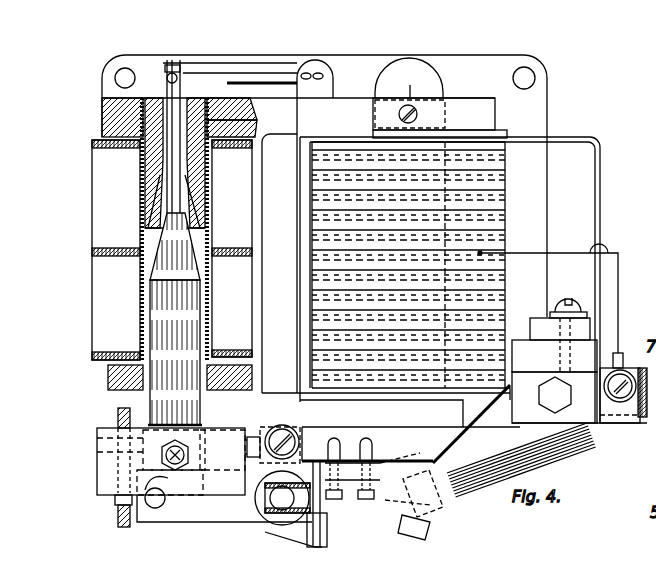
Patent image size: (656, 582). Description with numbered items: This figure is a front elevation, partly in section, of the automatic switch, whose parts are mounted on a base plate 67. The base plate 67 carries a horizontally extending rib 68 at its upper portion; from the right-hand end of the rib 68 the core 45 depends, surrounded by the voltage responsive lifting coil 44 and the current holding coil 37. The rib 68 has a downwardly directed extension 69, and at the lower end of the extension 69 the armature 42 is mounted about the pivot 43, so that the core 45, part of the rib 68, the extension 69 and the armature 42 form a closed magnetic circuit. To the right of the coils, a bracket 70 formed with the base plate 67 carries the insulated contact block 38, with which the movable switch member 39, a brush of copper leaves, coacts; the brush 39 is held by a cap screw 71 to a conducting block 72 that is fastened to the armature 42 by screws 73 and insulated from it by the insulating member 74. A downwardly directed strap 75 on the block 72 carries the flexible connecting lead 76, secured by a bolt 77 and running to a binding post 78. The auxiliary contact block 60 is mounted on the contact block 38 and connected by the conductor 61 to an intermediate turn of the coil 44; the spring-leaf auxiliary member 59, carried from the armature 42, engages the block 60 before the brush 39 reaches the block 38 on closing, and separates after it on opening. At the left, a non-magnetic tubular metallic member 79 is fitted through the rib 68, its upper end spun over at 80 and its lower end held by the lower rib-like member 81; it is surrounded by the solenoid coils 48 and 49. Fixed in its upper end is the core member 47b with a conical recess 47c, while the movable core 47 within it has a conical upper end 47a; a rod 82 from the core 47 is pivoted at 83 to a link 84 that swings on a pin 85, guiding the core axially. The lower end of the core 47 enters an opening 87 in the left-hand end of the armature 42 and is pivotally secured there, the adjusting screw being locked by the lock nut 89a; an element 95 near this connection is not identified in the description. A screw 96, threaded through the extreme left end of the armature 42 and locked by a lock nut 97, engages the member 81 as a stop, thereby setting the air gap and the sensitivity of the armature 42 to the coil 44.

The current holding coil 37 is at (486, 178).
The contact block 38 is at (625, 412).
The movable switch member 39 is at (503, 442).
The armature 42 is at (411, 444).
The pivot 43 is at (285, 421).
The voltage responsive lifting coil 44 is at (476, 246).
The core 45 is at (448, 213).
The core 47 is at (193, 404).
The conical upper end 47a is at (175, 250).
The fixed core member 47b is at (205, 97).
The conical recess 47c is at (162, 205).
The coil 48 is at (229, 229).
The coil 49 is at (232, 302).
The auxiliary contact member 59 is at (587, 412).
The auxiliary contact block 60 is at (633, 417).
The conductor 61 is at (620, 288).
The base plate 67 is at (412, 60).
The rib 68 is at (458, 107).
The downward extension 69 is at (286, 245).
The bracket 70 is at (490, 392).
The cap screw 71 is at (430, 528).
The conducting block 72 is at (446, 505).
The screws 73 is at (368, 510).
The insulating member 74 is at (500, 455).
The strap 75 is at (322, 537).
The flexible connecting lead 76 is at (307, 487).
The bolt 77 is at (336, 510).
The binding post 78 is at (270, 507).
The tubular metallic member 79 is at (255, 130).
The spun-over upper end 80 is at (140, 97).
The lower rib-like member 81 is at (116, 384).
The rod 82 is at (255, 110).
The pivotal connection 83 is at (177, 68).
The link 84 is at (258, 74).
The pin 85 is at (318, 70).
The opening 87 is at (162, 505).
The lock nut 89a is at (180, 467).
The bracket 95 is at (248, 443).
The screw 96 is at (120, 420).
The lock nut 97 is at (116, 502).